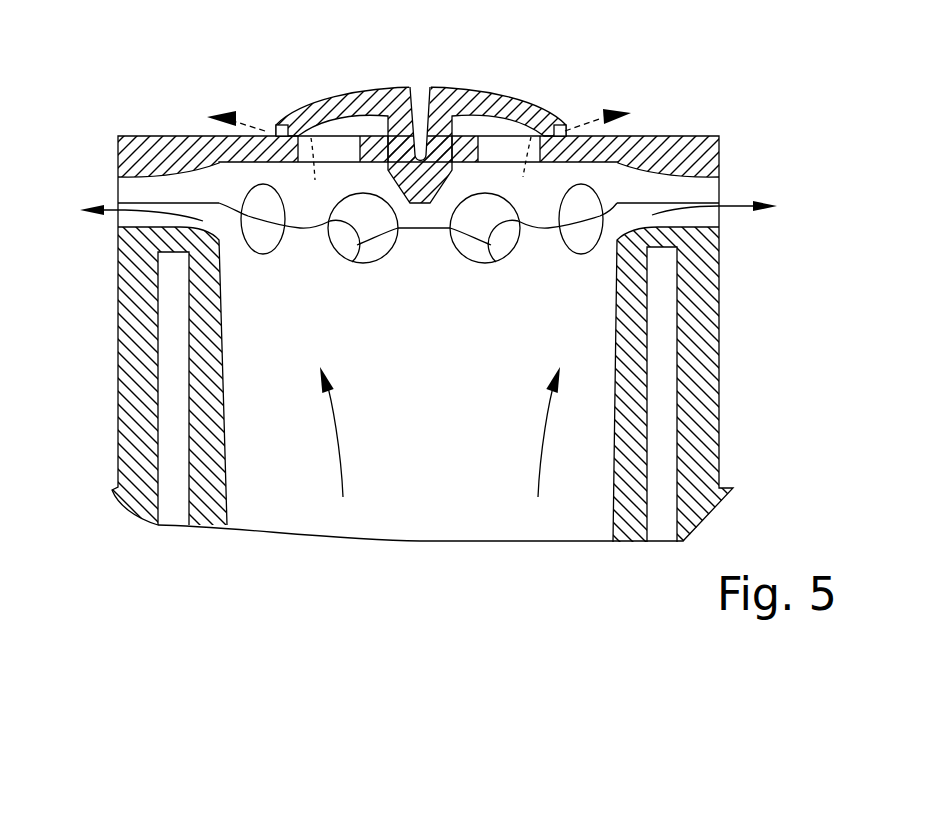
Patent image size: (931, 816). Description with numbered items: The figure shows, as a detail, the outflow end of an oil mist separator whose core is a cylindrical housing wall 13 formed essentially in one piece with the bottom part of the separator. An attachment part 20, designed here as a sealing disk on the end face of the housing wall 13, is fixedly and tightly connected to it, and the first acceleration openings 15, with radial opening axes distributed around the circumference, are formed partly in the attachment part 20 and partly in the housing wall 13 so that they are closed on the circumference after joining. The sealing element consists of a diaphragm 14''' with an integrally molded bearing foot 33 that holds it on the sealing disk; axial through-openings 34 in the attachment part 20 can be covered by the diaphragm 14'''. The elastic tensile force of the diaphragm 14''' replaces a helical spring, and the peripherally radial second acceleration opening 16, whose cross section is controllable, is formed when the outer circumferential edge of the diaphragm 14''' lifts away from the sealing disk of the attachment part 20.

The cylindrical housing wall 13 is at (157, 340).
The diaphragm 14''' is at (421, 107).
The first acceleration openings 15 is at (172, 193).
The second acceleration opening 16 is at (282, 126).
The attachment part 20 is at (702, 150).
The bearing foot 33 is at (437, 200).
The axial through-openings 34 is at (335, 160).